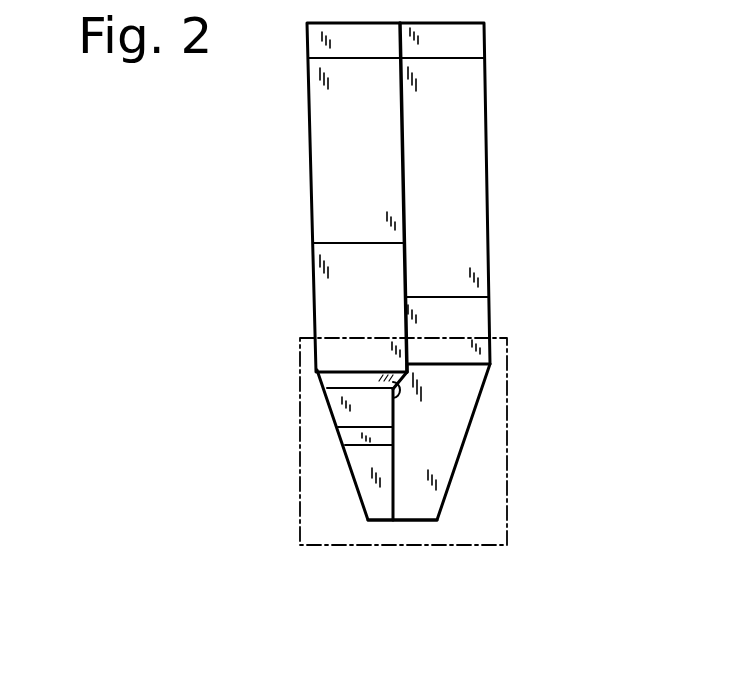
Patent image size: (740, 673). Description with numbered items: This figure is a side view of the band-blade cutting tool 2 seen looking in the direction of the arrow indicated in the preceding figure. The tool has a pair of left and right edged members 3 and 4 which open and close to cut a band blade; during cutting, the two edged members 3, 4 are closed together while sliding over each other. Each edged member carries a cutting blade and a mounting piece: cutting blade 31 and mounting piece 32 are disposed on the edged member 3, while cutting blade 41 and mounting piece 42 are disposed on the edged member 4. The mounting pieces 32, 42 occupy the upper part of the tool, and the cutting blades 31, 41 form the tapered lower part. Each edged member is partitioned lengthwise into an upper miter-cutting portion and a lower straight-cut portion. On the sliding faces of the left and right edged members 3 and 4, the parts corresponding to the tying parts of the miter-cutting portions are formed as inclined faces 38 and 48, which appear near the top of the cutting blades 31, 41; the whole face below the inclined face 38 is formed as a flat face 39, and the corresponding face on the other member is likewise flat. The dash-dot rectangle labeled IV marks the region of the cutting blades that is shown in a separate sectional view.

The band-blade cutting tool 2 is at (499, 168).
The edged member 3 is at (311, 163).
The edged member 4 is at (487, 212).
The cutting blade 31 is at (330, 416).
The mounting piece 32 is at (310, 87).
The inclined face 38 is at (284, 341).
The flat face 39 is at (424, 563).
The cutting blade 41 is at (479, 405).
The mounting piece 42 is at (485, 79).
The inclined face 48 is at (393, 397).
The section line IV is at (507, 470).